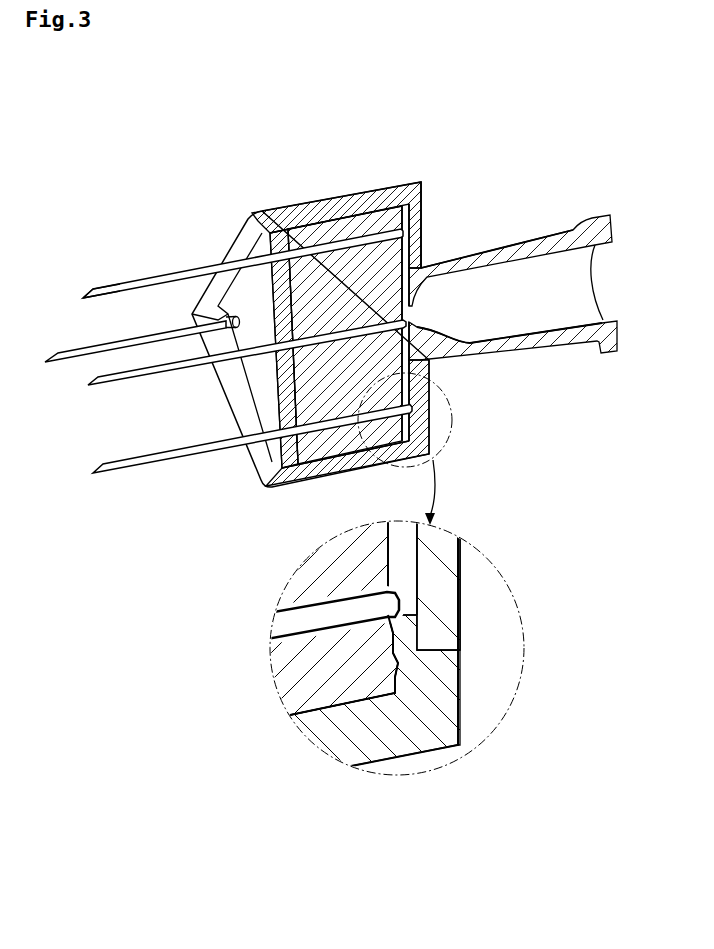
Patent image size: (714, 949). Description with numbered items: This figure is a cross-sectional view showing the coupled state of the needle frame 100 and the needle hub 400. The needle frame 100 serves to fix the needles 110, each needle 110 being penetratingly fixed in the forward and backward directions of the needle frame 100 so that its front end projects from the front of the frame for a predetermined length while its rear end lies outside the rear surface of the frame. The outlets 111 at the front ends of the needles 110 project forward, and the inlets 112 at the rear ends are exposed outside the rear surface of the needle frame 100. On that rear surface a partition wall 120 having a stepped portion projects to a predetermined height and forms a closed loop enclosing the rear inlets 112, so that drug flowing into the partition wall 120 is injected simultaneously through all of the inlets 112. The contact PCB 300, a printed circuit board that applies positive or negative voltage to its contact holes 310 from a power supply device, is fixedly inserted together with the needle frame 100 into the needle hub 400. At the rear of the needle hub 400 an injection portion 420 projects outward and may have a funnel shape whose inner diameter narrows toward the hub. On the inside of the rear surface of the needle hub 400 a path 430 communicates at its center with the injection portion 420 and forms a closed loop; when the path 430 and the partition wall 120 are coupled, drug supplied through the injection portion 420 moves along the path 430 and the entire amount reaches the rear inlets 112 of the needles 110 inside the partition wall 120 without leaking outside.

The needle frame 100 is at (345, 194).
The needle 110 is at (200, 268).
The outlet 111 is at (83, 296).
The inlet 112 is at (423, 210).
The partition wall 120 is at (400, 660).
The contact PCB 300 is at (240, 401).
The contact hole 310 is at (270, 352).
The needle hub 400 is at (392, 174).
The injection portion 420 is at (531, 240).
The path 430 is at (382, 595).